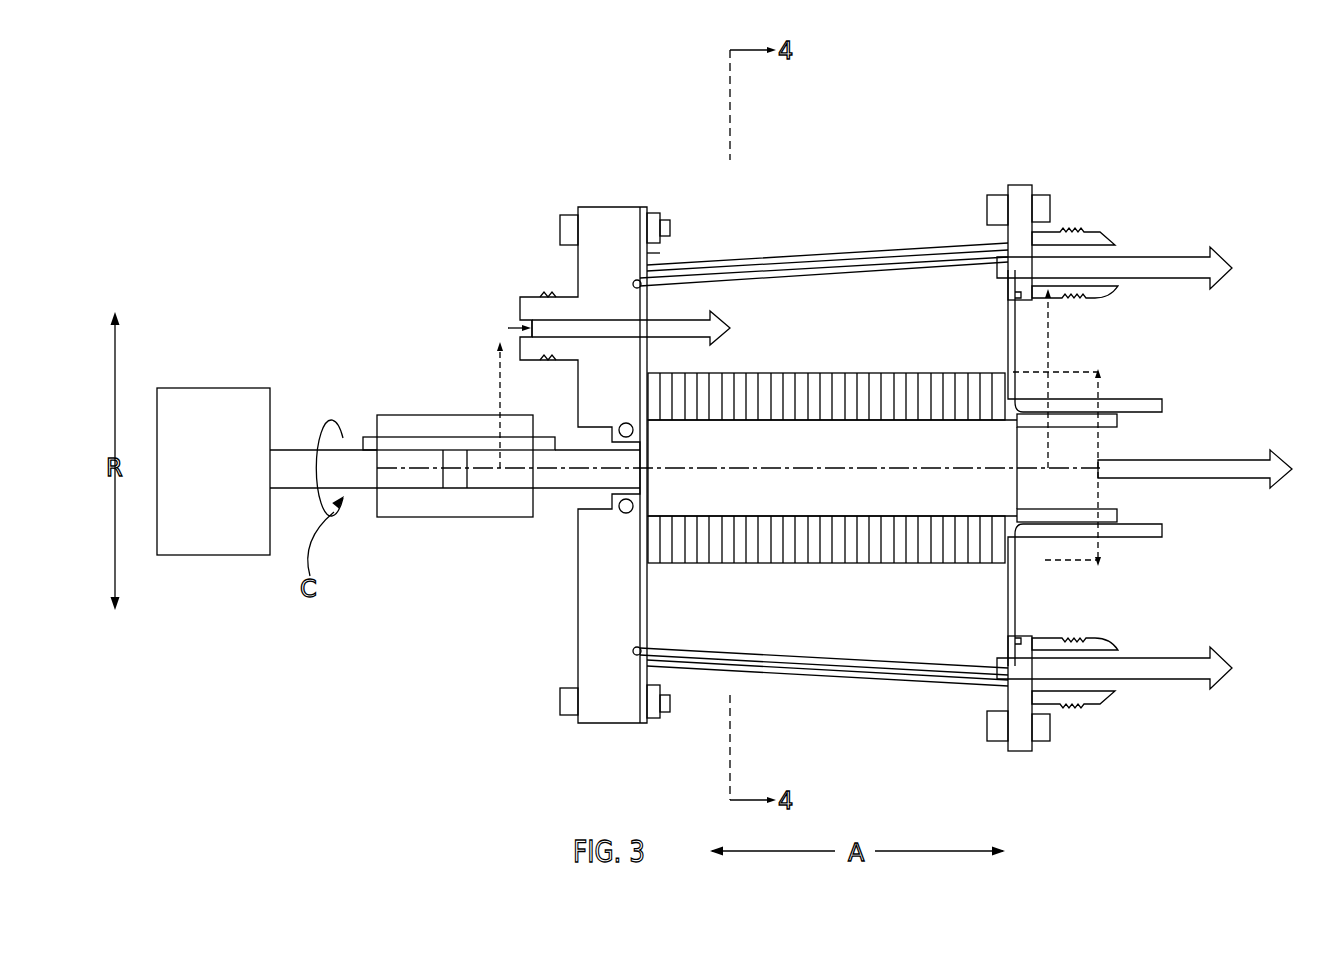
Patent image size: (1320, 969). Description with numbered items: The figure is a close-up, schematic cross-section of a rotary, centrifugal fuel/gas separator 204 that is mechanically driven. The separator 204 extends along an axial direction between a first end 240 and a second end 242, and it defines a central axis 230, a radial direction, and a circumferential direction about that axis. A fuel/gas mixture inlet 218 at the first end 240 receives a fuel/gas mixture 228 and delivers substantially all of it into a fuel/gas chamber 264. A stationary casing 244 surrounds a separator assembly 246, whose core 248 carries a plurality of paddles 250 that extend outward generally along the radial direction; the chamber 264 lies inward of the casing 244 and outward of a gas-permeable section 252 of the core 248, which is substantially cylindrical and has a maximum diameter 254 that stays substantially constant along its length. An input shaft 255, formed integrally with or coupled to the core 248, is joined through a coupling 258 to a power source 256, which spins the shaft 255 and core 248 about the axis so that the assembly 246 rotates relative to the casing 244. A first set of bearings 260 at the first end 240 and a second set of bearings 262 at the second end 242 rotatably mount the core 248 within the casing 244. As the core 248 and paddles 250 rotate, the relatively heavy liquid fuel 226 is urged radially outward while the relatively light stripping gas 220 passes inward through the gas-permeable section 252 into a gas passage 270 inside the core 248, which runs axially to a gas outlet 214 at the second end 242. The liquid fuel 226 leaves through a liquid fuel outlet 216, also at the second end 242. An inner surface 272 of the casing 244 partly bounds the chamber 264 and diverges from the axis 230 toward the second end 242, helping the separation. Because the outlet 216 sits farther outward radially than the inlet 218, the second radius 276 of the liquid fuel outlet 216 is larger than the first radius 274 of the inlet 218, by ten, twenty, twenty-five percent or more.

The fuel/gas separator 204 is at (852, 108).
The gas outlet 214 is at (1155, 494).
The liquid fuel outlet 216 is at (1125, 283).
The fuel/gas mixture inlet 218 is at (520, 326).
The stripping gas 220 is at (1238, 458).
The liquid fuel 226 is at (1172, 262).
The fuel/gas mixture 228 is at (606, 326).
The central axis 230 is at (932, 476).
The first end 240 is at (493, 220).
The second end 242 is at (1100, 212).
The stationary casing 244 is at (735, 262).
The separator assembly 246 is at (850, 274).
The core 248 is at (881, 352).
The paddles 250 is at (785, 305).
The gas-permeable section 252 is at (943, 562).
The maximum diameter 254 is at (1112, 390).
The input shaft 255 is at (556, 480).
The power source 256 is at (287, 412).
The coupling 258 is at (417, 505).
The first set of bearings 260 is at (610, 420).
The second set of bearings 262 is at (1115, 523).
The fuel/gas chamber 264 is at (724, 298).
The gas passage 270 is at (748, 493).
The inner surface 272 is at (898, 661).
The first radius 274 is at (497, 382).
The second radius 276 is at (1093, 340).